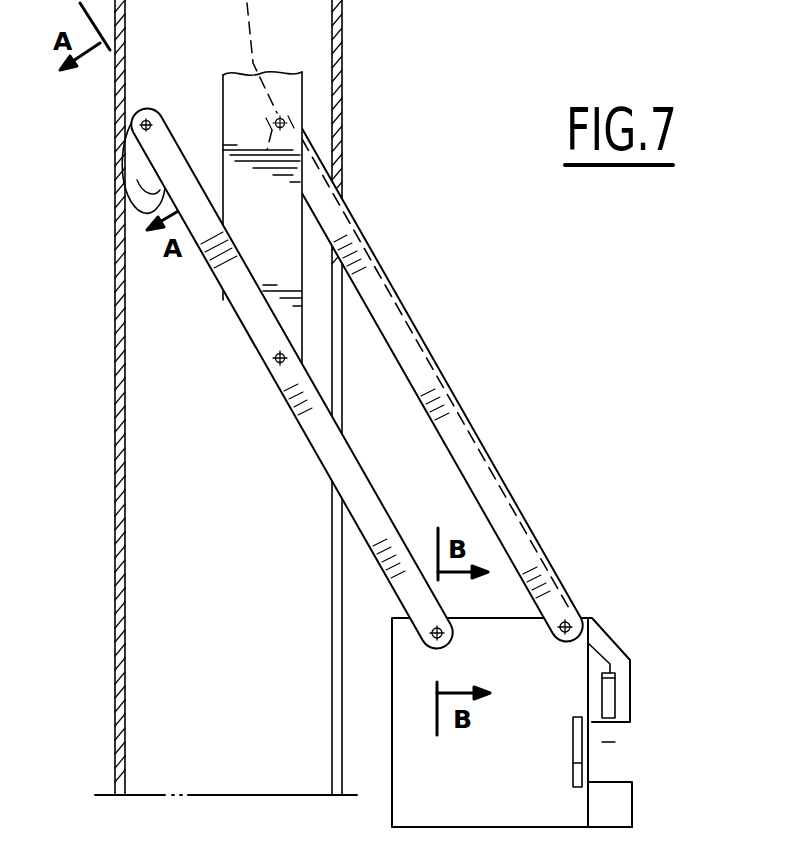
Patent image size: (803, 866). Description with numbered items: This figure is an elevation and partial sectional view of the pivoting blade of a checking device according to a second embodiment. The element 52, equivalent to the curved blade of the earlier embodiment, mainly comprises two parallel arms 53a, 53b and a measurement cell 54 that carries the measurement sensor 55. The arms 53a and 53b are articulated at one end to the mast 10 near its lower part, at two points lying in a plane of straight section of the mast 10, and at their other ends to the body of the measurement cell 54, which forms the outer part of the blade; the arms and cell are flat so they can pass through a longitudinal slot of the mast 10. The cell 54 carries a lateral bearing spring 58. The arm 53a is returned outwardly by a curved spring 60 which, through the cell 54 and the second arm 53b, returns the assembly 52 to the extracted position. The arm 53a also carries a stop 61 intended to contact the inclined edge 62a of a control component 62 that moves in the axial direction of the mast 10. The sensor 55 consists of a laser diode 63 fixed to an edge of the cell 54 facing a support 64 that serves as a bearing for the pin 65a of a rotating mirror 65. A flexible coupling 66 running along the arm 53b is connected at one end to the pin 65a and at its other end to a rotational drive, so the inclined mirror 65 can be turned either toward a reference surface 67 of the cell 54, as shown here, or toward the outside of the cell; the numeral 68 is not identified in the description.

The mast 10 is at (102, 545).
The element 52 is at (414, 280).
The arm 53a is at (330, 458).
The arm 53b is at (457, 418).
The measurement cell 54 is at (413, 762).
The measurement sensor 55 is at (647, 680).
The lateral bearing spring 58 is at (573, 730).
The curved spring 60 is at (140, 205).
The stop 61 is at (275, 362).
The control component 62 is at (282, 75).
The inclined edge 62a is at (212, 266).
The laser diode 63 is at (613, 813).
The support 64 is at (603, 640).
The rotating mirror 65 is at (604, 746).
The pin 65a is at (610, 742).
The flexible coupling 66 is at (512, 505).
The reference surface 67 is at (573, 763).
The actuating direction 68 is at (655, 658).